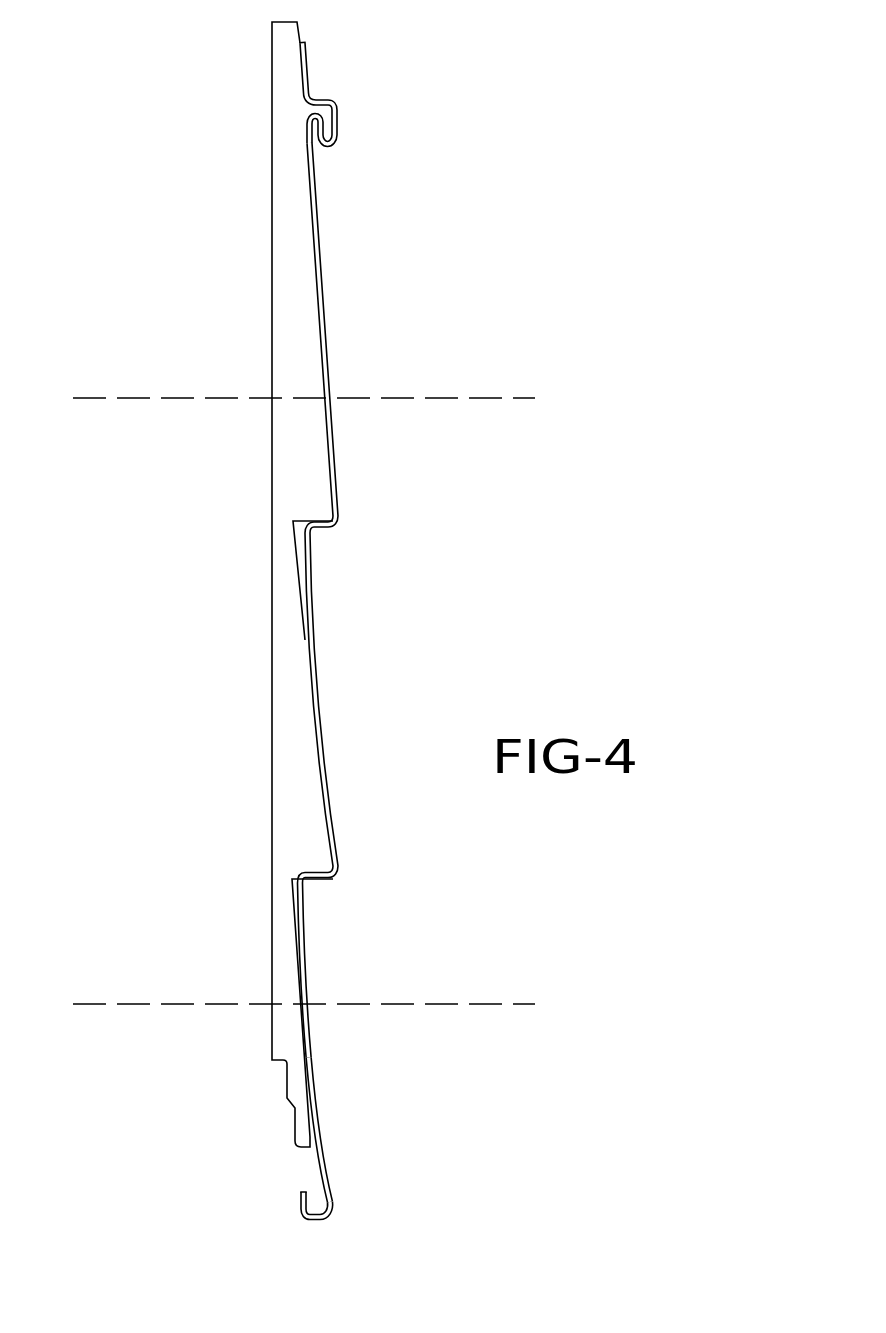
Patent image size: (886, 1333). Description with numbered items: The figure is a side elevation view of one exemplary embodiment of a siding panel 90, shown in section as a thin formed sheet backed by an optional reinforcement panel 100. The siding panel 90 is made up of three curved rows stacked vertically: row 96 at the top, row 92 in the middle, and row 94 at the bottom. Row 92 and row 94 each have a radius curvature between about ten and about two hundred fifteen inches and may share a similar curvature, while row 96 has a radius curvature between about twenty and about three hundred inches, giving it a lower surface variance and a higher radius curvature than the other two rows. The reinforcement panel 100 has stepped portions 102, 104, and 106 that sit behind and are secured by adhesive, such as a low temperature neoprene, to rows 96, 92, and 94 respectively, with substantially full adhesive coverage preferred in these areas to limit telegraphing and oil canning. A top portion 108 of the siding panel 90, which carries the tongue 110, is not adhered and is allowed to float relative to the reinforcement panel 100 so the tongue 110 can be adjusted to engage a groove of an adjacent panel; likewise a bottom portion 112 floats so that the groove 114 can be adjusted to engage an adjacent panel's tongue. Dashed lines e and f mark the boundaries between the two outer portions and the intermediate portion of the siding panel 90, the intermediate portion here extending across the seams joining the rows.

The siding panel 90 is at (351, 483).
The row 92 is at (318, 650).
The row 94 is at (312, 1072).
The row 96 is at (323, 311).
The reinforcement panel 100 is at (259, 484).
The portion 102 is at (321, 377).
The portion 104 is at (314, 747).
The portion 106 is at (299, 978).
The top portion 108 is at (318, 150).
The tongue 110 is at (332, 100).
The bottom portion 112 is at (320, 1118).
The groove 114 is at (320, 1221).
The dashed line e is at (100, 398).
The dashed line f is at (100, 1003).